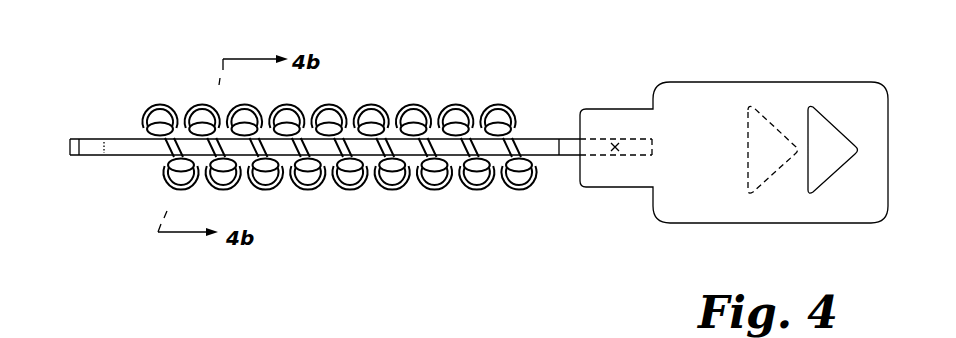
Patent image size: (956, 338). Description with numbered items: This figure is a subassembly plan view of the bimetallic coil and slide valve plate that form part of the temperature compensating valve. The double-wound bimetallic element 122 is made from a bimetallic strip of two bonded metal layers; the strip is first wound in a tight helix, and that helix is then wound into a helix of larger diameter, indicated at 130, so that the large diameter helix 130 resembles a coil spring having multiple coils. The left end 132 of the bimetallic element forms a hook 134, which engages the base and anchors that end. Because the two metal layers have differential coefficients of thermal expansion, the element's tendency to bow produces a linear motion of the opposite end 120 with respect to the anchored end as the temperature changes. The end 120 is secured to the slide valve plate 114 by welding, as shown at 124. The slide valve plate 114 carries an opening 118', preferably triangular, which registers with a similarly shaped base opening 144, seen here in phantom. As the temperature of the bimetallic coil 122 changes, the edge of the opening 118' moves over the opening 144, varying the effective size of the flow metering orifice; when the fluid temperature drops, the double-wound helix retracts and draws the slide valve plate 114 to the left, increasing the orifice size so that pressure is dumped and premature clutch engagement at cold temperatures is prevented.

The slide valve plate 114 is at (760, 81).
The opening in slide valve plate 118' is at (814, 105).
The end of bimetallic element 120 is at (557, 143).
The double-wound bimetallic element 122 is at (337, 100).
The weld 124 is at (615, 152).
The large diameter helix 130 is at (266, 189).
The left end of bimetallic element 132 is at (117, 143).
The hook 134 is at (76, 156).
The base opening 144 is at (758, 168).